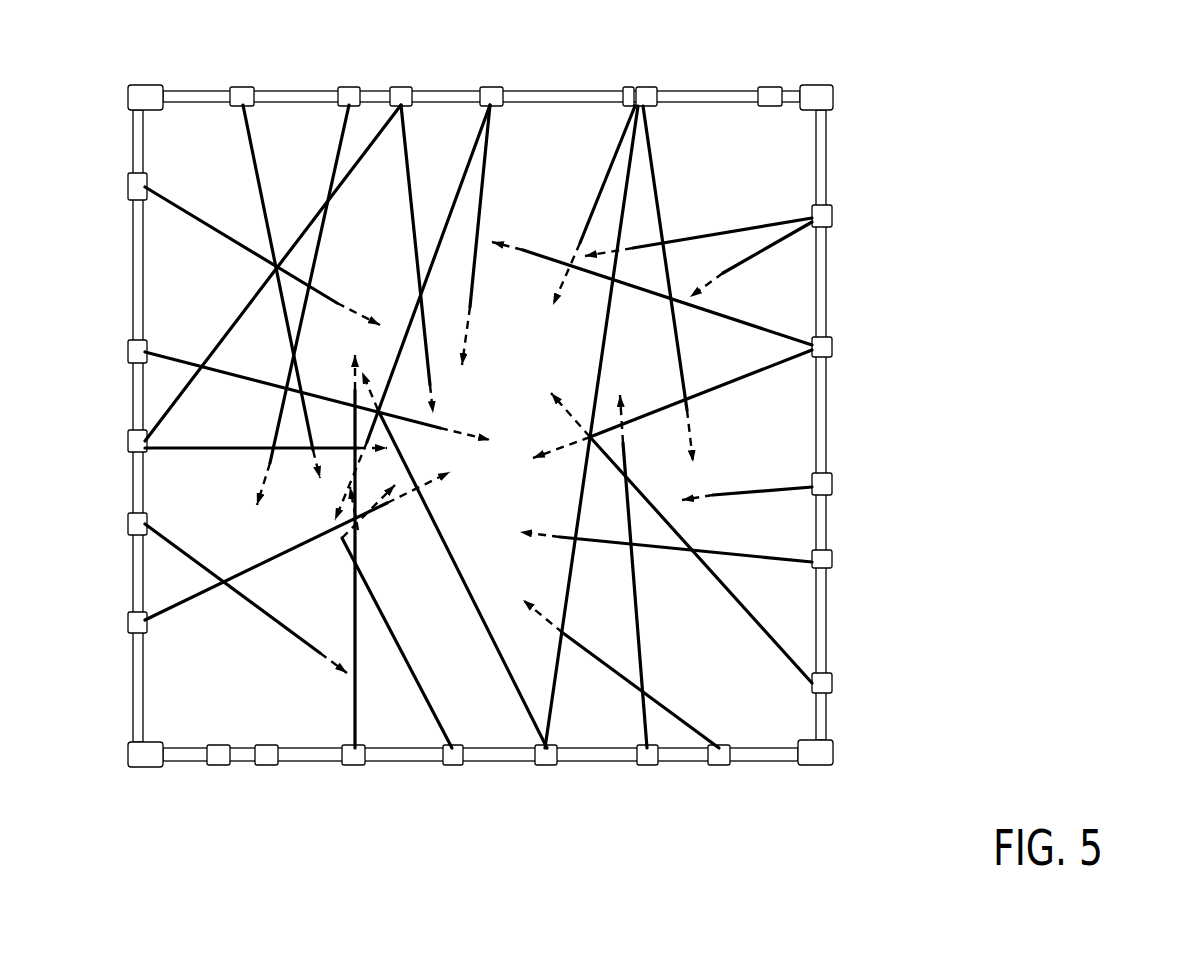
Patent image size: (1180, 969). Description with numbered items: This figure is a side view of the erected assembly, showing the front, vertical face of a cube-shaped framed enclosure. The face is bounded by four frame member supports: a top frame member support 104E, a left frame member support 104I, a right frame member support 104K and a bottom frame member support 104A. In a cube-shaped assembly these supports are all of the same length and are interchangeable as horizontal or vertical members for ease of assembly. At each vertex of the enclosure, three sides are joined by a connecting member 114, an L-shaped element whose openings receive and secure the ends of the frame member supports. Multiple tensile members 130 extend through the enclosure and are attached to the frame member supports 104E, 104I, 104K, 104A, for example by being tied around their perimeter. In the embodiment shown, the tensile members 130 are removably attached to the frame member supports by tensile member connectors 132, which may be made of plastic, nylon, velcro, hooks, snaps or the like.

The frame member support 104E is at (287, 96).
The frame member support 104I is at (129, 283).
The frame member support 104K is at (830, 313).
The frame member support 104A is at (597, 763).
The connecting member 114 is at (814, 753).
The tensile member 130 is at (492, 152).
The tensile member connector 132 is at (274, 764).